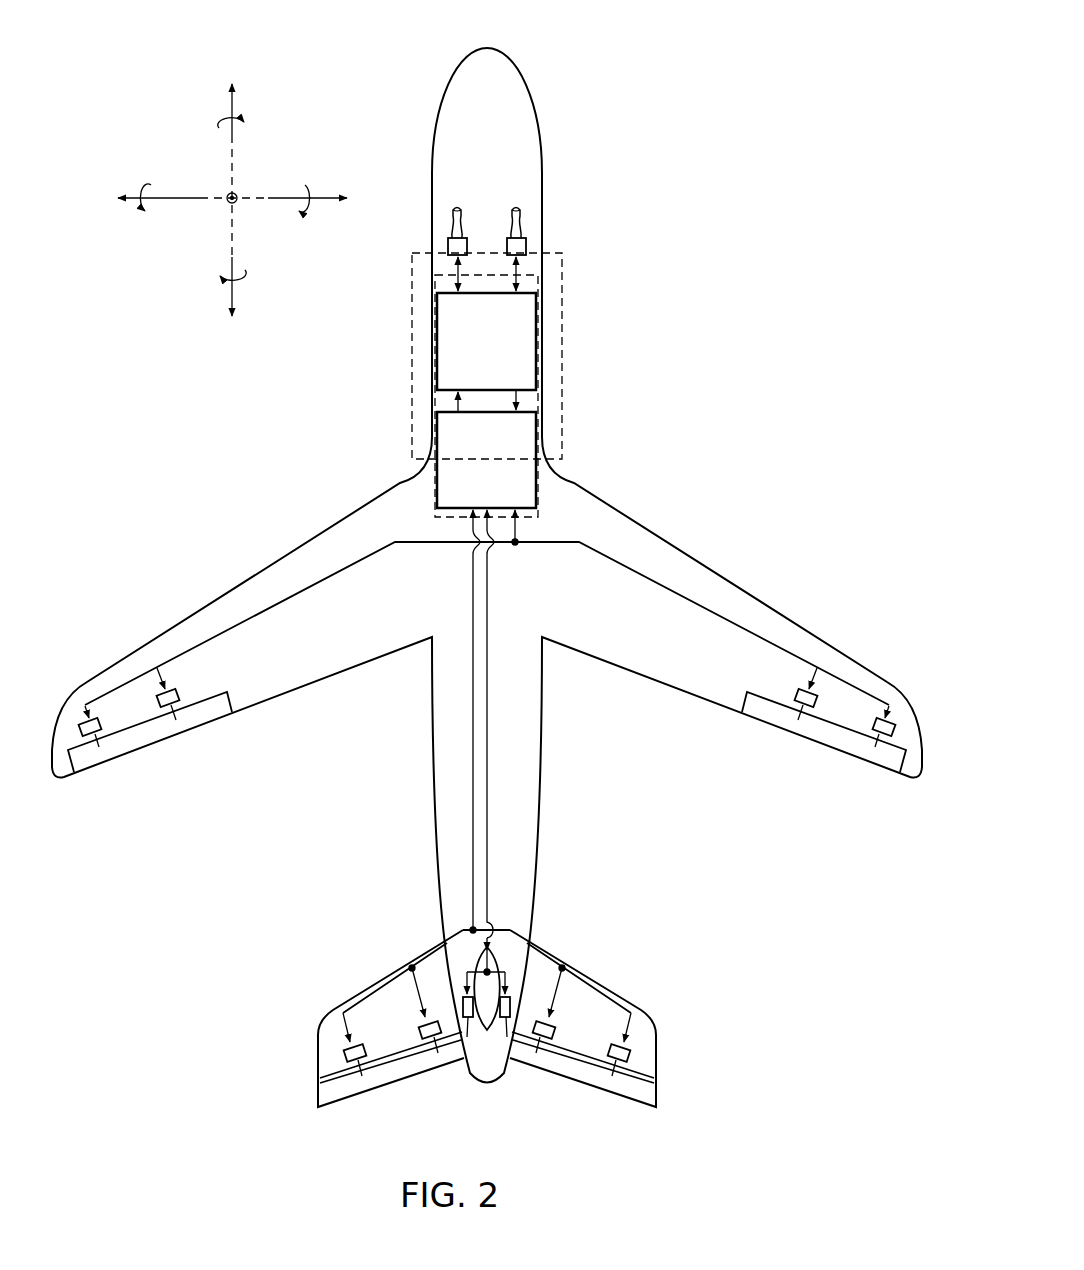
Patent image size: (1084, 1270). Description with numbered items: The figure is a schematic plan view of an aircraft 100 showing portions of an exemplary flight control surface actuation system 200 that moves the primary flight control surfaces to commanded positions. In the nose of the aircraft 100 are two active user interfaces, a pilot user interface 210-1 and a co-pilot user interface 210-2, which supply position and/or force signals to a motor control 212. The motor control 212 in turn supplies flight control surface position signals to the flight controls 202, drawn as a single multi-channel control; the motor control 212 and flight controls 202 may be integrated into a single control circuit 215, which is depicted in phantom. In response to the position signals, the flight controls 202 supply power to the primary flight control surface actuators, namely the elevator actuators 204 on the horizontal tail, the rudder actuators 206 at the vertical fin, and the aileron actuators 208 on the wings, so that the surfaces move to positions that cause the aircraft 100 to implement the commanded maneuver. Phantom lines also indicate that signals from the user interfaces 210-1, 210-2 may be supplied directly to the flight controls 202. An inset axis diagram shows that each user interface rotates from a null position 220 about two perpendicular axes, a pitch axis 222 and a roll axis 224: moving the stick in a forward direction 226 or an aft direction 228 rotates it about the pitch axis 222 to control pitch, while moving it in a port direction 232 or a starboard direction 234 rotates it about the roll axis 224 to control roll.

The aircraft 100 is at (511, 70).
The flight control surface actuation system 200 is at (484, 205).
The flight controls 202 is at (523, 495).
The elevator actuators 204 is at (345, 1053).
The rudder actuators 206 is at (466, 1017).
The aileron actuators 208 is at (183, 693).
The pilot user interface 210-1 is at (448, 246).
The co-pilot user interface 210-2 is at (526, 246).
The motor control 212 is at (527, 320).
The single control circuit 215 is at (538, 290).
The null position 220 is at (229, 204).
The pitch axis 222 is at (175, 197).
The roll axis 224 is at (236, 150).
The forward direction 226 is at (148, 215).
The aft direction 228 is at (300, 215).
The port direction 232 is at (220, 275).
The starboard direction 234 is at (250, 125).